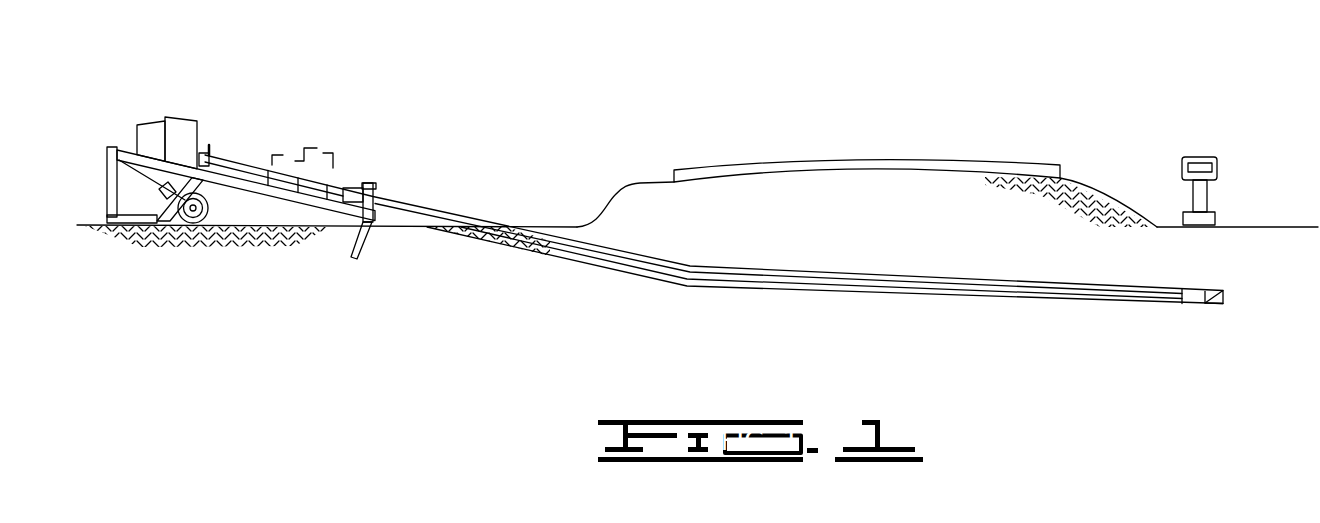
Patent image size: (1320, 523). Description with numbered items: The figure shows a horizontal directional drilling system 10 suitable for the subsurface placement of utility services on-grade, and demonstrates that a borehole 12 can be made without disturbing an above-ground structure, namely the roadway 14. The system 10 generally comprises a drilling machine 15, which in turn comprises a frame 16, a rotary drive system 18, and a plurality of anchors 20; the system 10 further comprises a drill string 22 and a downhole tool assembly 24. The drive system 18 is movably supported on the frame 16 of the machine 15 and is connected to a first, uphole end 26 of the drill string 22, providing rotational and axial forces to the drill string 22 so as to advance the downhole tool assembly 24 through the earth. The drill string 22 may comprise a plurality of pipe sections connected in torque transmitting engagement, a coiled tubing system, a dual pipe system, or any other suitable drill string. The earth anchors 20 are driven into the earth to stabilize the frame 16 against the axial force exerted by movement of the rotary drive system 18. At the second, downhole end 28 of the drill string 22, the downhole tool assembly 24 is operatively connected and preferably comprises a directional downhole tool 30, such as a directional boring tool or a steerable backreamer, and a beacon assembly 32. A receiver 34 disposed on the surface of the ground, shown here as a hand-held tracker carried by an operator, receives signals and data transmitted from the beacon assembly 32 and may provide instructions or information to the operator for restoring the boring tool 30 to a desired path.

The horizontal directional drilling system 10 is at (345, 87).
The borehole 12 is at (1052, 281).
The roadway 14 is at (817, 162).
The drilling machine 15 is at (131, 170).
The frame 16 is at (110, 147).
The rotary drive system 18 is at (193, 118).
The anchors 20 is at (362, 247).
The drill string 22 is at (478, 219).
The downhole tool assembly 24 is at (1185, 314).
The uphole end 26 is at (377, 184).
The downhole end 28 is at (1133, 299).
The directional downhole tool 30 is at (1217, 305).
The beacon assembly 32 is at (1195, 303).
The receiver 34 is at (1205, 157).